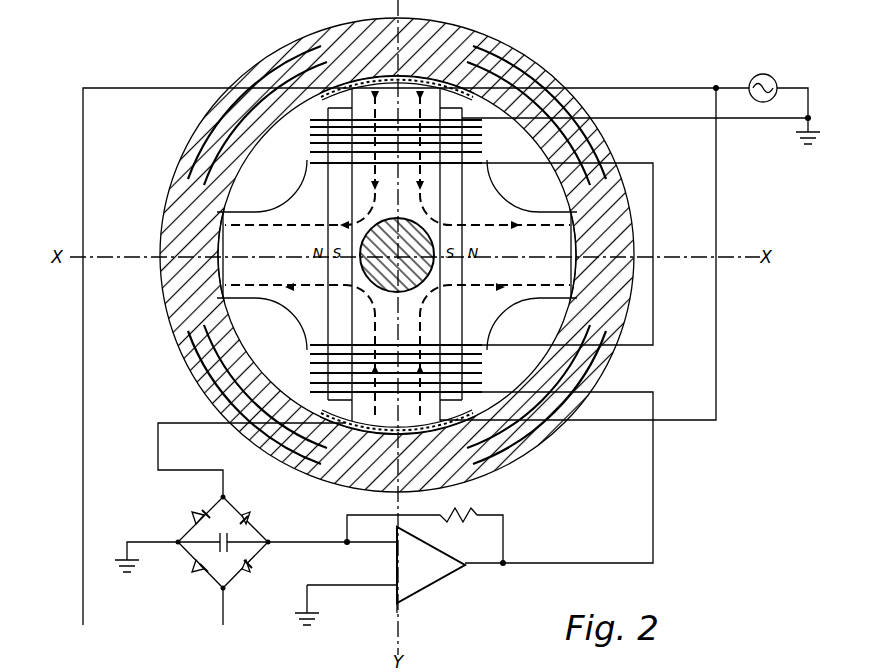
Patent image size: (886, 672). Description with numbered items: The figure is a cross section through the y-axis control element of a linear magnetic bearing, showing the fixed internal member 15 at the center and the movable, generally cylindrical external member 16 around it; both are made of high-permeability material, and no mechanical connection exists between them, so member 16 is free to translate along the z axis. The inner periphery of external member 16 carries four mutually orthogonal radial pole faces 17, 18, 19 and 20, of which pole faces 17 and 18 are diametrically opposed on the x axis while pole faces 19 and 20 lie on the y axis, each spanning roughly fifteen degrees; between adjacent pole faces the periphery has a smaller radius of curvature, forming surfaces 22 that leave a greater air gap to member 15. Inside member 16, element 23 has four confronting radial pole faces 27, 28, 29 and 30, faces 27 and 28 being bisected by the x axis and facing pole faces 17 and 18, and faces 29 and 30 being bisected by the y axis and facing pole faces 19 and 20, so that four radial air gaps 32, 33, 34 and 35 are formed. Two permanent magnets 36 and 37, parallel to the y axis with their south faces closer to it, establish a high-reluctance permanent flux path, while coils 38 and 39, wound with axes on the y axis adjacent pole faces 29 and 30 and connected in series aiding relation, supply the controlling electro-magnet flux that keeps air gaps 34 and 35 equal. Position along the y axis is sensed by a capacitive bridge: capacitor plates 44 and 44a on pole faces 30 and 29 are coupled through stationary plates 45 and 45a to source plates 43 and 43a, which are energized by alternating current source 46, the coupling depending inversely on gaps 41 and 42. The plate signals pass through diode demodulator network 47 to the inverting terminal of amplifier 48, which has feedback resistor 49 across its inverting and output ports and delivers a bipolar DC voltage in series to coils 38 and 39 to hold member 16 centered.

The internal member 15 is at (430, 228).
The external member 16 is at (543, 437).
The radial pole face 17 is at (215, 257).
The radial pole face 18 is at (580, 248).
The radial pole face 19 is at (407, 487).
The radial pole face 20 is at (390, 32).
The surfaces 22 is at (300, 165).
The element 23 is at (280, 193).
The radial pole face 27 is at (224, 242).
The radial pole face 28 is at (570, 242).
The radial pole face 29 is at (327, 447).
The radial pole face 30 is at (478, 120).
The radial air gap 32 is at (217, 268).
The radial air gap 33 is at (573, 270).
The radial air gap 34 is at (345, 430).
The radial air gap 35 is at (433, 70).
The permanent magnet 36 is at (337, 307).
The permanent magnet 37 is at (453, 318).
The coil 38 is at (310, 390).
The coil 39 is at (483, 142).
The gap 41 is at (340, 88).
The gap 42 is at (485, 398).
The plate 43 is at (455, 68).
The plate 43a is at (455, 455).
The capacitor plate 44 is at (367, 66).
The capacitor plate 44a is at (358, 422).
The stationary plate 45 is at (415, 70).
The stationary plate 45a is at (383, 422).
The alternating current source 46 is at (770, 78).
The diode demodulator network 47 is at (185, 572).
The amplifier 48 is at (429, 596).
The feedback resistor 49 is at (463, 518).